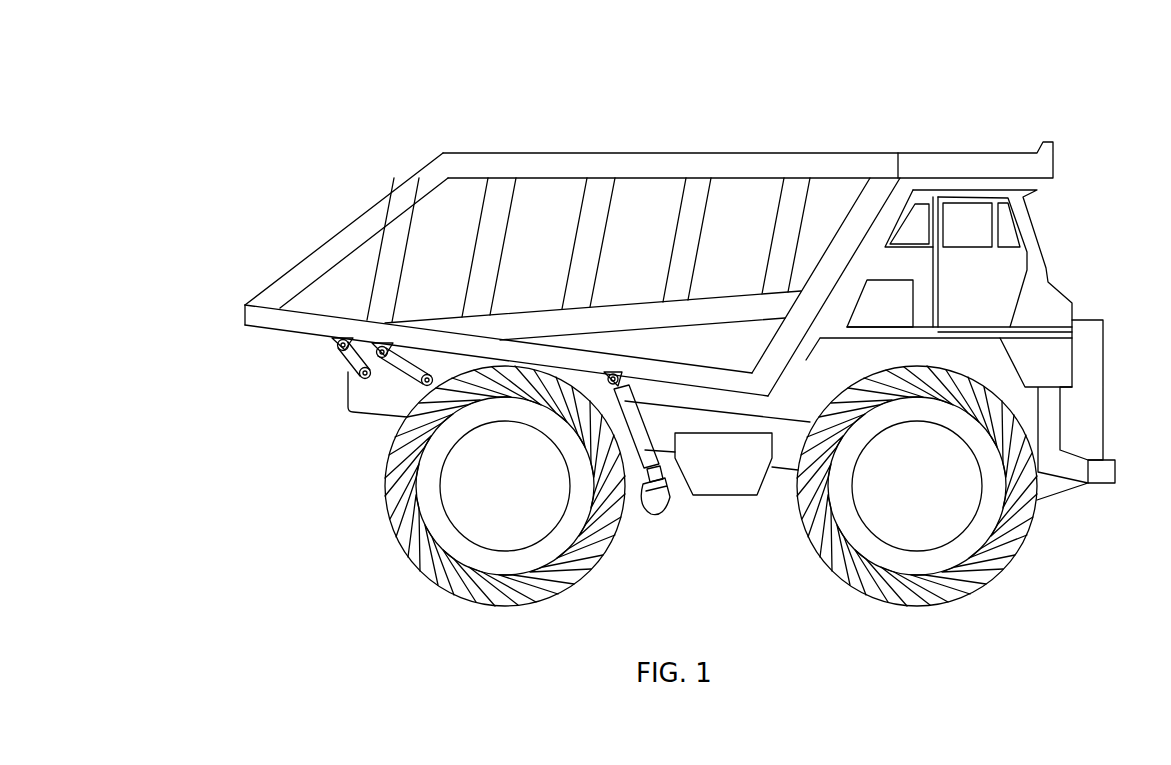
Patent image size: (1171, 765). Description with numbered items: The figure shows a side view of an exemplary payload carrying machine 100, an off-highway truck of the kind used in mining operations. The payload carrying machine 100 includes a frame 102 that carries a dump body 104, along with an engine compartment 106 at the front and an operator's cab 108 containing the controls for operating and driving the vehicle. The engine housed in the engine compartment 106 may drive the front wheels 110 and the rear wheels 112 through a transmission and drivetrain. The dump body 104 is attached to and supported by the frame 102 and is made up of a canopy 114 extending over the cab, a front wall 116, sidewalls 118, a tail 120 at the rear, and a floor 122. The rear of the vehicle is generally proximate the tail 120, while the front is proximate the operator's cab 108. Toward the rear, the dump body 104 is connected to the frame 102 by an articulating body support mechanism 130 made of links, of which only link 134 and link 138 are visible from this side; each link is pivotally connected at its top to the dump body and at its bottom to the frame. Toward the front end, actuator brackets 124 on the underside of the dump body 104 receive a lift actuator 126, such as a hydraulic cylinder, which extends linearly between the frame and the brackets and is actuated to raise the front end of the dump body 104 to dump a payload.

The payload carrying machine 100 is at (322, 88).
The frame 102 is at (789, 459).
The dump body 104 is at (528, 161).
The engine compartment 106 is at (1105, 388).
The operator's cab 108 is at (1047, 247).
The front wheels 110 is at (1026, 544).
The rear wheels 112 is at (384, 491).
The canopy 114 is at (1007, 159).
The front wall 116 is at (876, 215).
The sidewalls 118 is at (553, 255).
The tail 120 is at (241, 301).
The floor 122 is at (480, 329).
The actuator brackets 124 is at (619, 376).
The lift actuator 126 is at (669, 501).
The articulating body support mechanism 130 is at (323, 368).
The link 134 is at (346, 361).
The link 138 is at (391, 374).